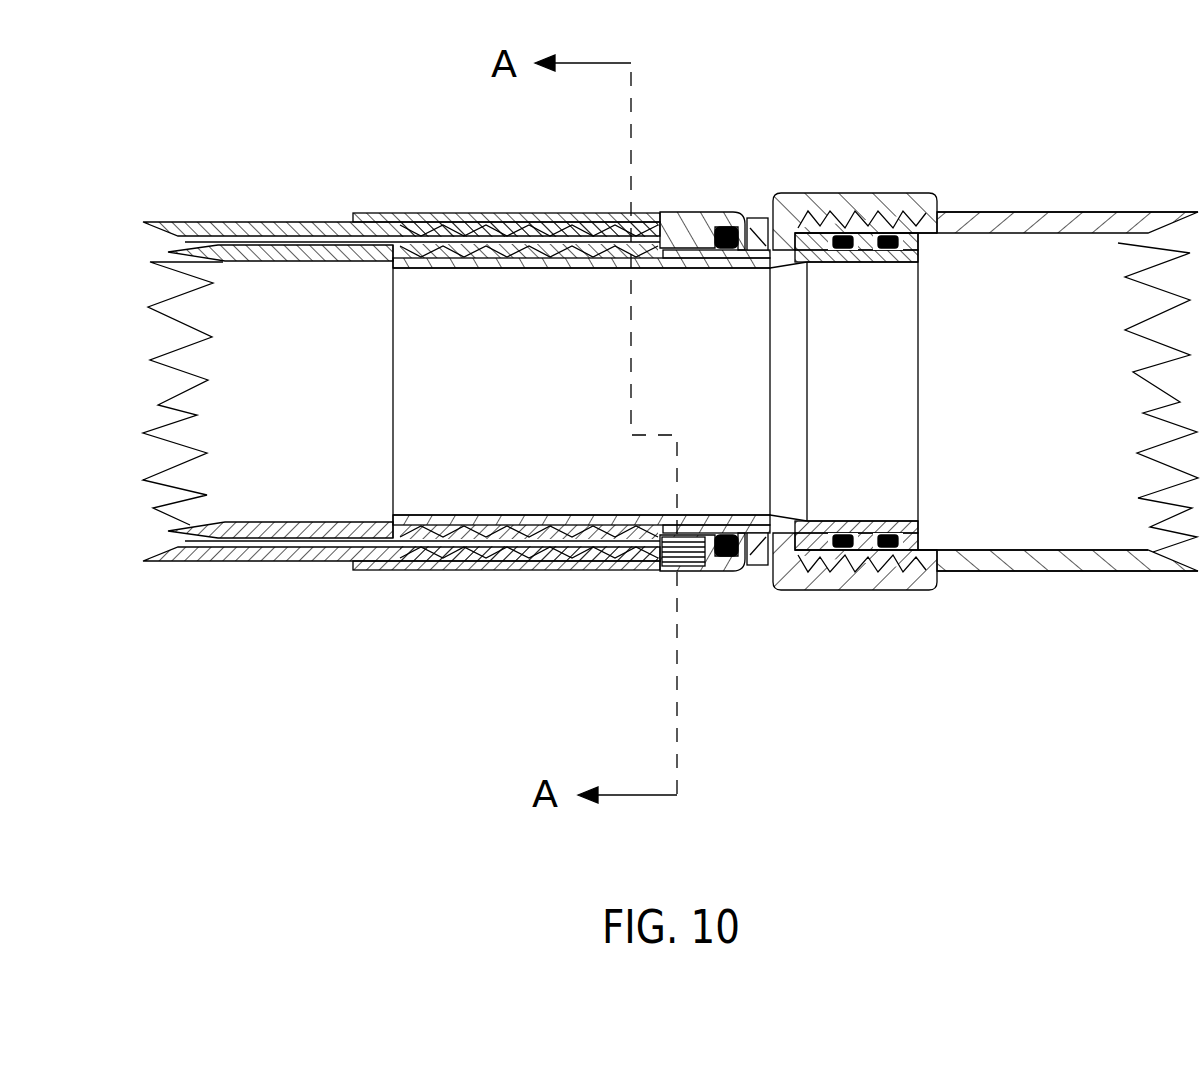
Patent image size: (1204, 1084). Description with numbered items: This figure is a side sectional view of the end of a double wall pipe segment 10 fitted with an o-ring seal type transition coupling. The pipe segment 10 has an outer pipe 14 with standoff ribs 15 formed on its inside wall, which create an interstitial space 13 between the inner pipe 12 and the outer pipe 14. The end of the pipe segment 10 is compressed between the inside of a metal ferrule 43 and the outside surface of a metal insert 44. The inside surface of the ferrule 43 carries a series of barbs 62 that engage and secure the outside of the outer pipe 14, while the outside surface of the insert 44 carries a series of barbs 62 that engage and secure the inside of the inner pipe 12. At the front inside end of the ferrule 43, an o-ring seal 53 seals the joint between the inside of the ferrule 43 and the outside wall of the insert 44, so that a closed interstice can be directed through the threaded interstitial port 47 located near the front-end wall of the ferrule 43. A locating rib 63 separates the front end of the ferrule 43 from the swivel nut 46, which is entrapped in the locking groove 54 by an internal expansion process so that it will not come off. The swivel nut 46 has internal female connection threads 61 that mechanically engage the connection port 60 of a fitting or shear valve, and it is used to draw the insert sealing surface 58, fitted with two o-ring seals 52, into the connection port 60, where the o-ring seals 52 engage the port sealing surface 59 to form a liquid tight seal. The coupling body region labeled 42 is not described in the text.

The double wall pipe segment 10 is at (267, 422).
The inner pipe 12 is at (342, 214).
The interstitial space 13 is at (297, 222).
The outer pipe 14 is at (188, 222).
The standoff ribs 15 is at (238, 222).
The coupling body 42 is at (690, 232).
The metal ferrule 43 is at (560, 216).
The metal insert 44 is at (622, 243).
The swivel nut 46 is at (890, 194).
The threaded interstitial port 47 is at (683, 572).
The o-ring seals 52 is at (886, 552).
The o-ring seal 53 is at (728, 215).
The locking groove 54 is at (790, 195).
The insert sealing surface 58 is at (928, 548).
The port sealing surface 59 is at (993, 548).
The connection port 60 is at (1170, 212).
The internal female connection threads 61 is at (1052, 212).
The barbs 62 is at (473, 573).
The locating rib 63 is at (748, 215).